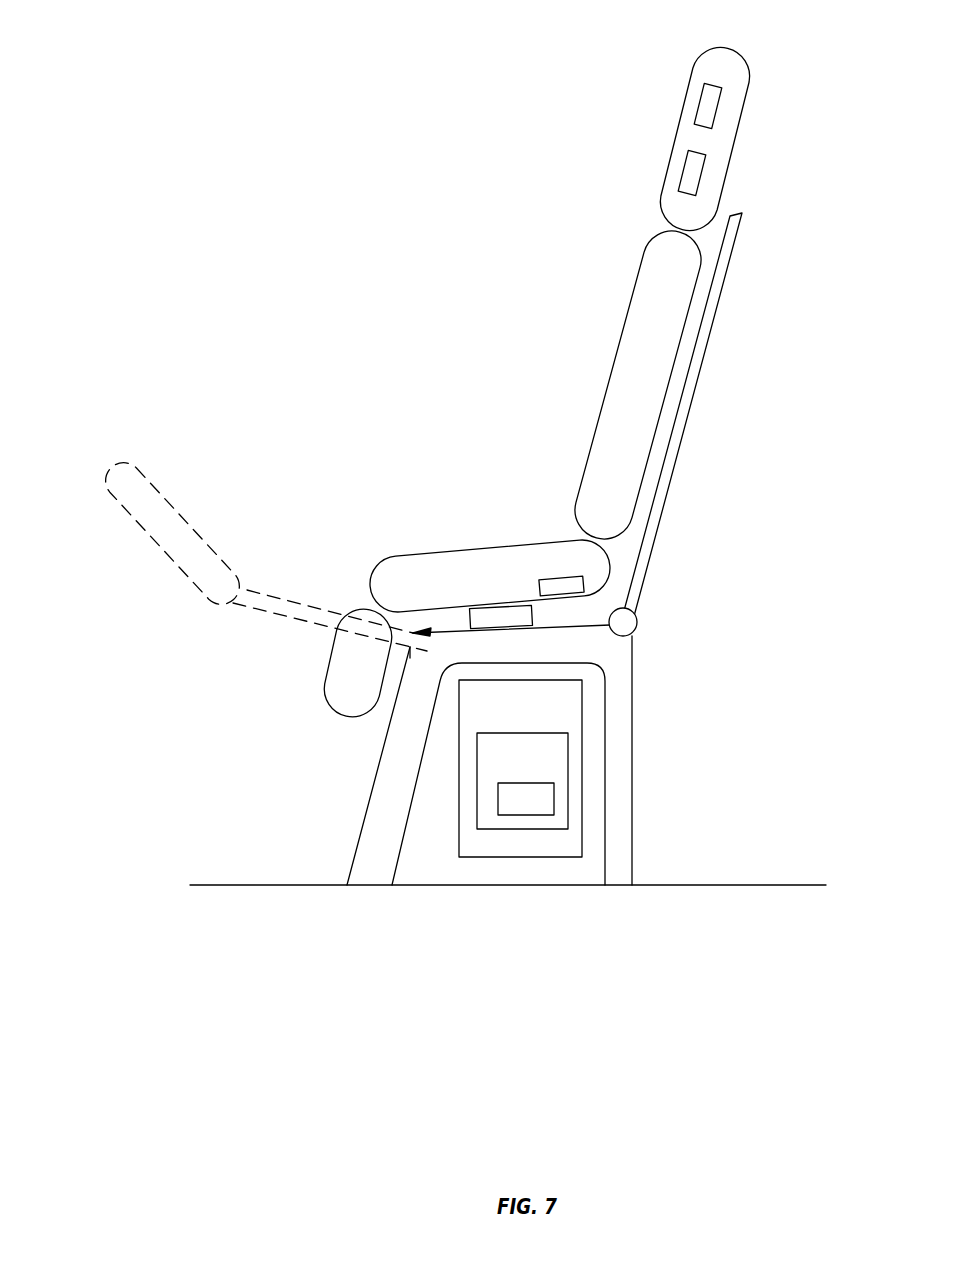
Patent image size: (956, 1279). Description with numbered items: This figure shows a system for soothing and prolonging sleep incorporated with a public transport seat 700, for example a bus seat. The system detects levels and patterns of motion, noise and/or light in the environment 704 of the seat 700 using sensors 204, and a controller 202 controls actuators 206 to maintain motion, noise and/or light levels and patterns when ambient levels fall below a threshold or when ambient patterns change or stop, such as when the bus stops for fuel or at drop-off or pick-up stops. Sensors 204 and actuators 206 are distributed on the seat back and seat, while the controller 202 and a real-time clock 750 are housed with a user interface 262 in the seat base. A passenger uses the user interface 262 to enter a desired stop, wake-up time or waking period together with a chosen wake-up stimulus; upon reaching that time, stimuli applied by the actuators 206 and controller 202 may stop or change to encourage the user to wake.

The public transport seat 700 is at (190, 55).
The environment 704 is at (568, 160).
The sensor 204 is at (708, 108).
The actuator 206 is at (692, 175).
The user interface 262 is at (120, 488).
The controller 202 is at (522, 781).
The real-time clock 750 is at (526, 799).